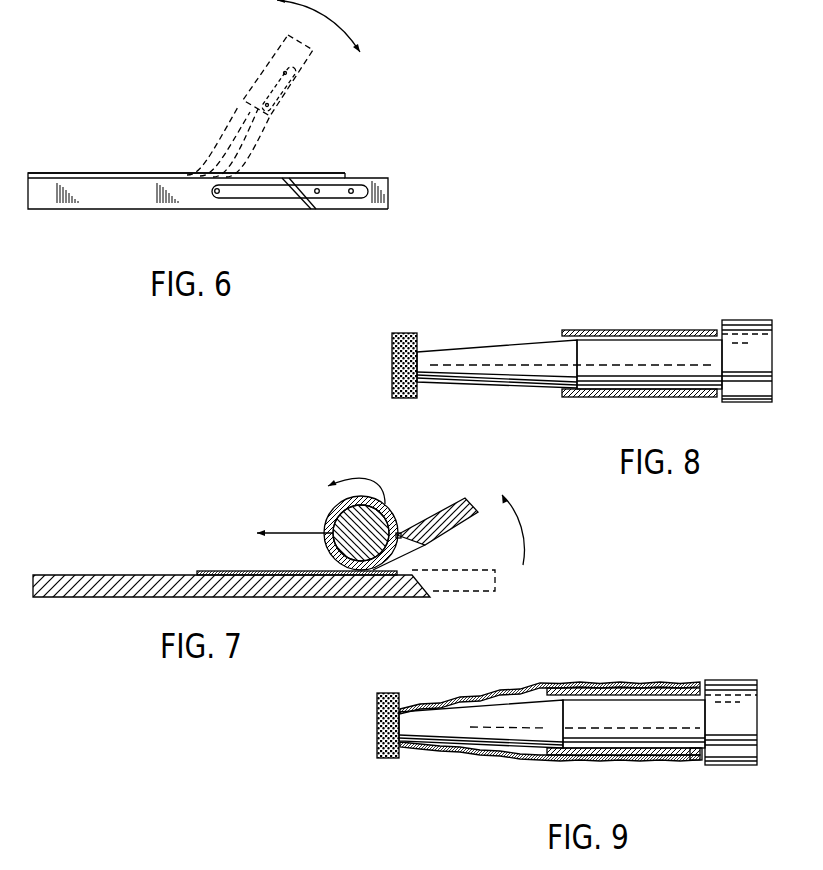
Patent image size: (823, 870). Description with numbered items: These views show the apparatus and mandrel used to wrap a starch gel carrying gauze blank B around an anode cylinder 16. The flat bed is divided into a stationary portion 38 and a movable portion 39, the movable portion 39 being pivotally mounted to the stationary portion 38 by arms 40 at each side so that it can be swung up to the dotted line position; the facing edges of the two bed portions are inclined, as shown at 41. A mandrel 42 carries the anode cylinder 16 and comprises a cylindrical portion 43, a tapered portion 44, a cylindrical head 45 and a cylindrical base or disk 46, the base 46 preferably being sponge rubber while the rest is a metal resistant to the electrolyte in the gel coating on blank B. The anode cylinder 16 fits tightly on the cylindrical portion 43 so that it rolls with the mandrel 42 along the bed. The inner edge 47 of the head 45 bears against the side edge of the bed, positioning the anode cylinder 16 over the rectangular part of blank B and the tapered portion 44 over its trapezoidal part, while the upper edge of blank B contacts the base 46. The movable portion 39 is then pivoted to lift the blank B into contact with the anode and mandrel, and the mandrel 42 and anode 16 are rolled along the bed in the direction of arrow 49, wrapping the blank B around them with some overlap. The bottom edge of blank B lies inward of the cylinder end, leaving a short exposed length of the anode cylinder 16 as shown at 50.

In FIG. 8, the anode cylinder 16 is at (613, 328).
In FIG. 7, the anode cylinder 16 is at (386, 511).
In FIG. 9, the anode cylinder 16 is at (698, 687).
In FIG. 6, the stationary portion 38 is at (40, 198).
In FIG. 7, the stationary portion 38 is at (377, 585).
In FIG. 6, the movable portion 39 is at (383, 204).
In FIG. 7, the movable portion 39 is at (459, 524).
In FIG. 6, the arms 40 is at (252, 196).
In FIG. 7, the arms 40 is at (407, 539).
In FIG. 6, the inclined facing edges 41 is at (309, 206).
In FIG. 8, the mandrel 42 is at (502, 392).
In FIG. 8, the cylindrical portion 43 is at (673, 341).
In FIG. 7, the cylindrical portion 43 is at (343, 545).
In FIG. 9, the cylindrical portion 43 is at (584, 707).
In FIG. 8, the tapered portion 44 is at (477, 346).
In FIG. 9, the tapered portion 44 is at (467, 714).
In FIG. 8, the cylindrical head 45 is at (740, 328).
In FIG. 9, the cylindrical head 45 is at (722, 766).
In FIG. 8, the cylindrical base 46 is at (392, 362).
In FIG. 9, the cylindrical base 46 is at (385, 758).
In FIG. 8, the inner edge 47 is at (723, 398).
In FIG. 7, the arrow 49 is at (338, 474).
In FIG. 9, the exposed length of anode cylinder 50 is at (698, 759).
In FIG. 6, the blank B is at (108, 172).
In FIG. 7, the blank B is at (212, 563).
In FIG. 9, the blank B is at (640, 680).